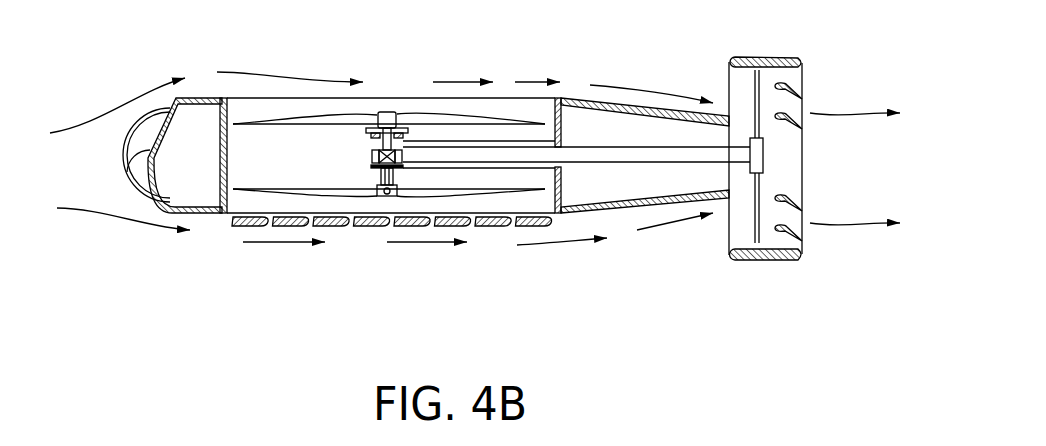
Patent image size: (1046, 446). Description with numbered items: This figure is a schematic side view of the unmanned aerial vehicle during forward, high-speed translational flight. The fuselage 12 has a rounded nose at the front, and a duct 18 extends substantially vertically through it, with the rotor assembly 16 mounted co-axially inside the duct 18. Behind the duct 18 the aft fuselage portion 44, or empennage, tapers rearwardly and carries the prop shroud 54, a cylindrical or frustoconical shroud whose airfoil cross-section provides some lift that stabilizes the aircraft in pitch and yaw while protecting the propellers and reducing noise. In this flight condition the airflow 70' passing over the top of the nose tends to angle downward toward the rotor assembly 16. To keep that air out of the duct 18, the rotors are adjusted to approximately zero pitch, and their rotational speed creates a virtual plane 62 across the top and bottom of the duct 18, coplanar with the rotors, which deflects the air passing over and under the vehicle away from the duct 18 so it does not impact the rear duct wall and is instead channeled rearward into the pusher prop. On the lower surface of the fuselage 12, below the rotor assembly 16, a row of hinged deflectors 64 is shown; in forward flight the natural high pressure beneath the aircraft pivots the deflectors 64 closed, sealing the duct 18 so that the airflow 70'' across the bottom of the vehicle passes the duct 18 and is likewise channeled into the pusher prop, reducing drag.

The fuselage 12 is at (125, 168).
The rotor assembly 16 is at (381, 100).
The duct 18 is at (227, 152).
The aft fuselage portion 44 is at (578, 100).
The prop shroud 54 is at (783, 57).
The virtual plane 62 is at (512, 122).
The deflectors 64 is at (367, 227).
The airflow over top of nose 70' is at (475, 79).
The airflow across bottom 70'' is at (476, 245).